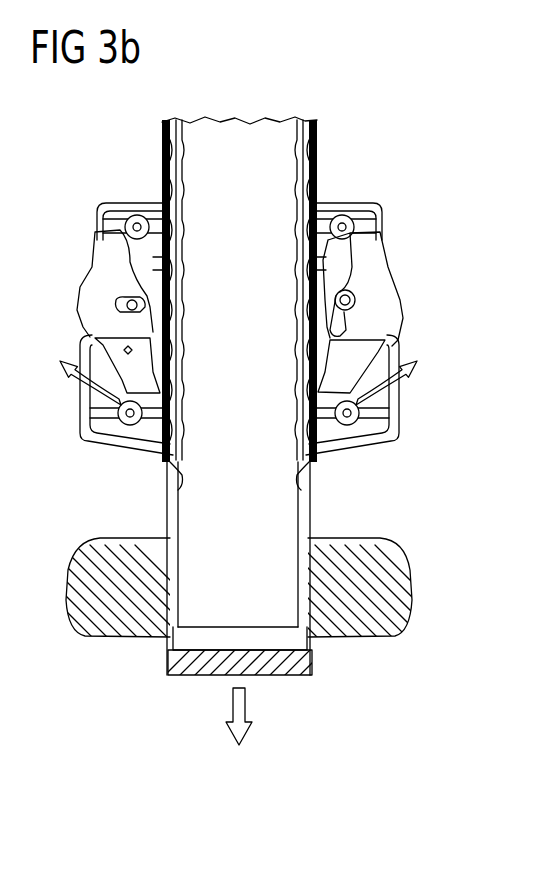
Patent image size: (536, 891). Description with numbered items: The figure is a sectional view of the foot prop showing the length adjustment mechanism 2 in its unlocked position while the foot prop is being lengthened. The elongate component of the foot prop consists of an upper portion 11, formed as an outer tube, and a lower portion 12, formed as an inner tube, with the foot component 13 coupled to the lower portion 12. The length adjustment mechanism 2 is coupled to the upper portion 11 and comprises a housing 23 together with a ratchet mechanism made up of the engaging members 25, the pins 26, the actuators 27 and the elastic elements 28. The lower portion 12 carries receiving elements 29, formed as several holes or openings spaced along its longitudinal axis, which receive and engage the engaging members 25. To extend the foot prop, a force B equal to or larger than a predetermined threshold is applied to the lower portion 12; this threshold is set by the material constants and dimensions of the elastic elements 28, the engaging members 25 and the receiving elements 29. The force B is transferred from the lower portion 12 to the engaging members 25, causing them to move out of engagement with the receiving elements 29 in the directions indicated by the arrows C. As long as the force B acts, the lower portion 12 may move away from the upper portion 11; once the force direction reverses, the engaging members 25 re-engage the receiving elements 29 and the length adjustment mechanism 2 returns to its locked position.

The length adjustment mechanism 2 is at (80, 219).
The upper portion 11 is at (318, 126).
The lower portion 12 is at (310, 500).
The foot component 13 is at (378, 631).
The housing 23 is at (385, 216).
The engaging members 25 is at (140, 377).
The pins 26 is at (125, 305).
The actuators 27 is at (103, 268).
The elastic elements 28 is at (393, 347).
The receiving elements 29 is at (162, 193).
The force B is at (245, 707).
The arrows C is at (78, 408).